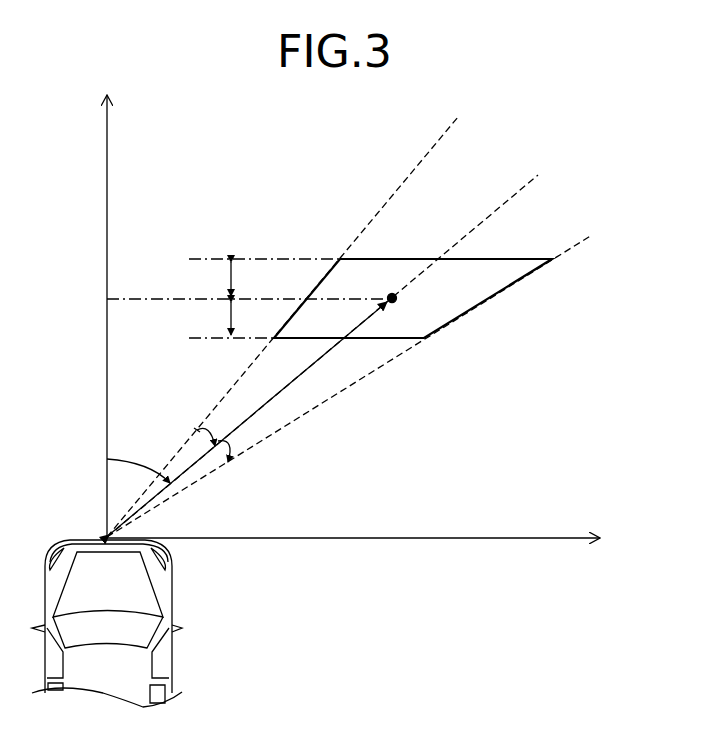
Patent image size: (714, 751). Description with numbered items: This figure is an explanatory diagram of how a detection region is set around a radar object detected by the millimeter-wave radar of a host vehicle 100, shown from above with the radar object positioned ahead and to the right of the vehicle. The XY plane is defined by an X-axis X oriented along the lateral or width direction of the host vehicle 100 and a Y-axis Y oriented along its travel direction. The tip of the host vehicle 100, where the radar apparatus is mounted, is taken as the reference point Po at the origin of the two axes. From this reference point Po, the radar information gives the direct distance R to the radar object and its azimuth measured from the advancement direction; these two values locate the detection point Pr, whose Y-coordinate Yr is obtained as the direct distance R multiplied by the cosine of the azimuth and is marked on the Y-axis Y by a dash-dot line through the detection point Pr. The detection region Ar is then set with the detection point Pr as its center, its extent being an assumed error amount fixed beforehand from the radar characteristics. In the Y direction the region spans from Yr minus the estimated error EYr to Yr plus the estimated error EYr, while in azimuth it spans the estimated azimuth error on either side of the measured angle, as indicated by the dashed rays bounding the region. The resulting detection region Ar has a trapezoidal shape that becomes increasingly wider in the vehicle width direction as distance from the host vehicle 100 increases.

The host vehicle 100 is at (172, 612).
The detection region Ar is at (505, 292).
The reference point Po is at (105, 537).
The detection point Pr is at (396, 298).
The direct distance R is at (248, 418).
The Y-coordinate of the detection point Yr is at (232, 298).
The estimated error of the Y-coordinate EYr is at (207, 298).
The X-axis X is at (372, 550).
The Y-axis Y is at (91, 306).